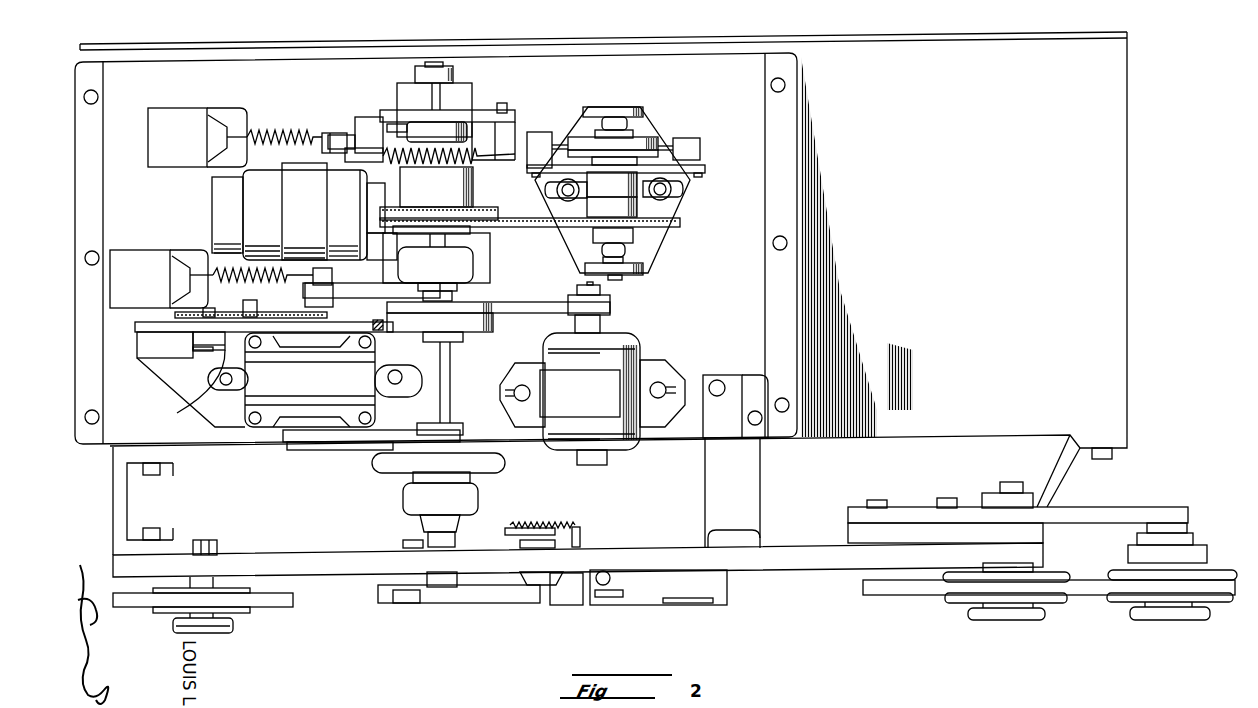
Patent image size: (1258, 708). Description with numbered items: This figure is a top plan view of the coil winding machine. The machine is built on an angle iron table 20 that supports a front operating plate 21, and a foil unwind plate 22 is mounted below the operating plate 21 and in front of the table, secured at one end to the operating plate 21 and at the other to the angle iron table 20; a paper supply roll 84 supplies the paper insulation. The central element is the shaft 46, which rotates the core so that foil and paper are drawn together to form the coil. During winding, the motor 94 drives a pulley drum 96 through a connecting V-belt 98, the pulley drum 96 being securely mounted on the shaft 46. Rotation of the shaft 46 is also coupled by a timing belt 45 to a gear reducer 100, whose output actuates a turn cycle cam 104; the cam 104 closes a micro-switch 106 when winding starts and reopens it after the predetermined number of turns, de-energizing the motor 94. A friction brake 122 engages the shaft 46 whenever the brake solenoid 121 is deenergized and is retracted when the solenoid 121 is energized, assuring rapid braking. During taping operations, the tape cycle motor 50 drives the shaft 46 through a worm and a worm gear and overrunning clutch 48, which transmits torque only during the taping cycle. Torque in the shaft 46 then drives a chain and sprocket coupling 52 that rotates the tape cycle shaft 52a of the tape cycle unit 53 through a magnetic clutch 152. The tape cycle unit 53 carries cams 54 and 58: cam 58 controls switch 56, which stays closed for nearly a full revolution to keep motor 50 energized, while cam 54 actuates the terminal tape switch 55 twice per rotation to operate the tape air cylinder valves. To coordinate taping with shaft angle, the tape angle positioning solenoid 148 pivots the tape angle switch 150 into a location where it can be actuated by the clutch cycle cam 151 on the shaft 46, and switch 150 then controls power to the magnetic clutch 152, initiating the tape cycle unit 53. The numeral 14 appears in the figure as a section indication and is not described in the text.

The angle iron table 20 is at (1138, 381).
The front operating plate 21 is at (234, 553).
The foil unwind plate 22 is at (1123, 506).
The section line 14 is at (310, 158).
The timing belt 45 is at (378, 428).
The shaft 46 is at (450, 403).
The worm gear and overrunning clutch 48 is at (436, 202).
The tape cycle motor 50 is at (312, 218).
The chain and sprocket coupling 52 is at (505, 227).
The tape cycle shaft 52a is at (622, 279).
The tape cycle unit 53 is at (664, 121).
The cam 54 is at (578, 116).
The terminal tape switch 55 is at (546, 132).
The switch 56 is at (701, 152).
The cam 58 is at (702, 168).
The paper supply roll 84 is at (906, 597).
The motor 94 is at (585, 401).
The pulley drum 96 is at (480, 304).
The V-belt 98 is at (537, 314).
The gear reducer 100 is at (315, 393).
The turn cycle cam 104 is at (178, 395).
The micro-switch 106 is at (163, 352).
The brake solenoid 121 is at (152, 295).
The friction brake 122 is at (378, 334).
The tape angle positioning solenoid 148 is at (187, 149).
The tape angle switch 150 is at (366, 126).
The clutch cycle cam 151 is at (455, 122).
The magnetic clutch 152 is at (652, 204).